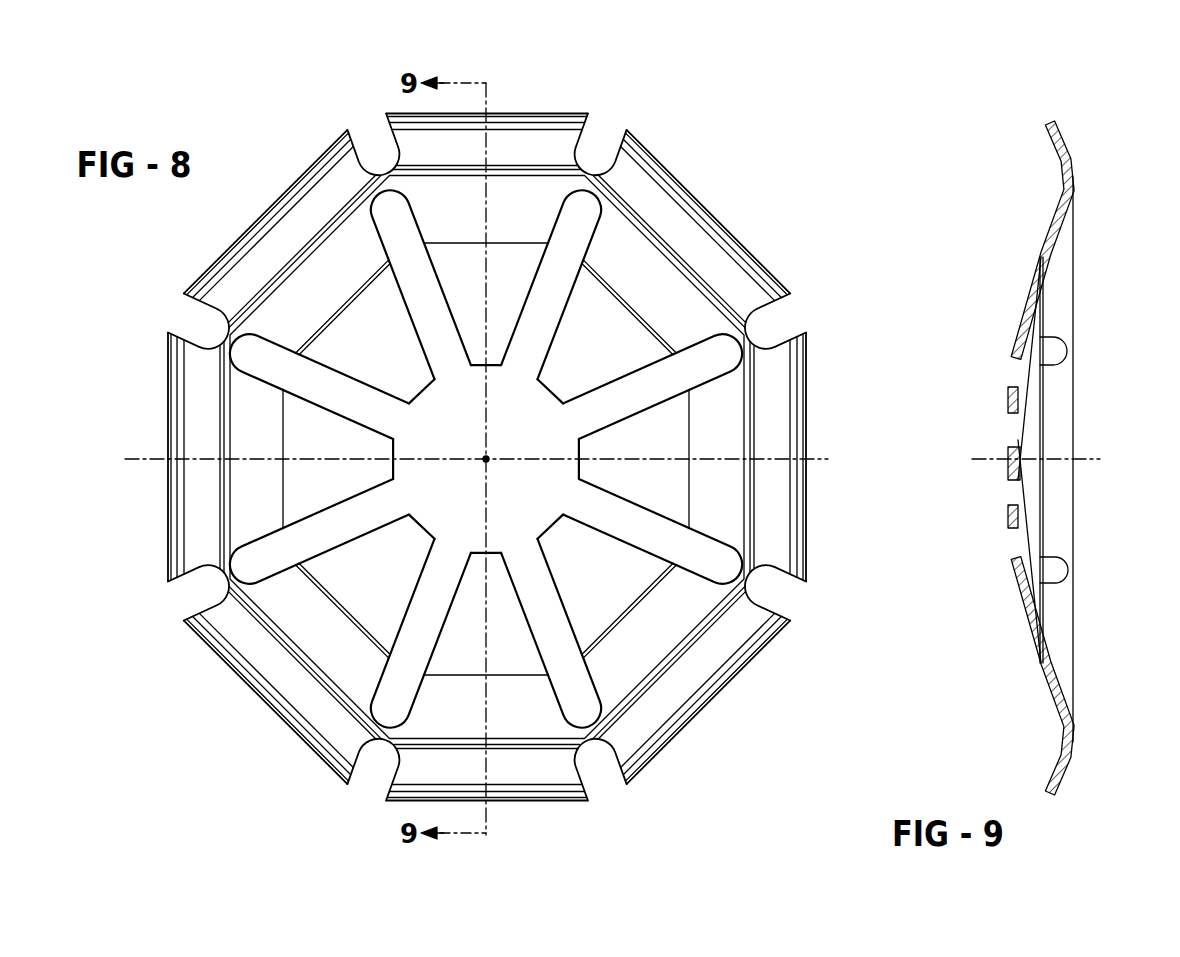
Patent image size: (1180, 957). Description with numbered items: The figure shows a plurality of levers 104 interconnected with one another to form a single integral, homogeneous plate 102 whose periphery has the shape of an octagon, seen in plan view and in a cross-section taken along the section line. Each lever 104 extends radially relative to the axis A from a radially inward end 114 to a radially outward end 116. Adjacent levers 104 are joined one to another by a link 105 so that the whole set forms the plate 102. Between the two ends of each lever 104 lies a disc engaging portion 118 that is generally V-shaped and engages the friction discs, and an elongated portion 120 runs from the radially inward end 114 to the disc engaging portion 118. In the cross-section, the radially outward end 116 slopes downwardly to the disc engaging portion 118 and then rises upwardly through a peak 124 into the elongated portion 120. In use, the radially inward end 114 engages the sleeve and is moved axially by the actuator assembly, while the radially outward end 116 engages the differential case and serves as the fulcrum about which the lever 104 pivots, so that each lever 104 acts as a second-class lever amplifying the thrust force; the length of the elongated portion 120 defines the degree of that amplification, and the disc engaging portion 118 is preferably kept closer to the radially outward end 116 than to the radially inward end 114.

In FIG. 8, the plate 102 is at (158, 652).
In FIG. 9, the plate 102 is at (946, 240).
In FIG. 8, the lever 104 is at (350, 327).
In FIG. 9, the lever 104 is at (1070, 345).
In FIG. 8, the link 105 is at (378, 165).
In FIG. 9, the link 105 is at (1078, 205).
In FIG. 8, the radially inward end 114 is at (492, 368).
In FIG. 9, the radially inward end 114 is at (1010, 400).
In FIG. 8, the radially outward end 116 is at (312, 172).
In FIG. 9, the radially outward end 116 is at (1062, 120).
In FIG. 9, the disc engaging portion 118 is at (1080, 165).
In FIG. 8, the elongated portion 120 is at (412, 356).
In FIG. 9, the elongated portion 120 is at (1012, 302).
In FIG. 8, the peak 124 is at (362, 290).
In FIG. 9, the peak 124 is at (1040, 215).
In FIG. 8, the axis A is at (488, 459).